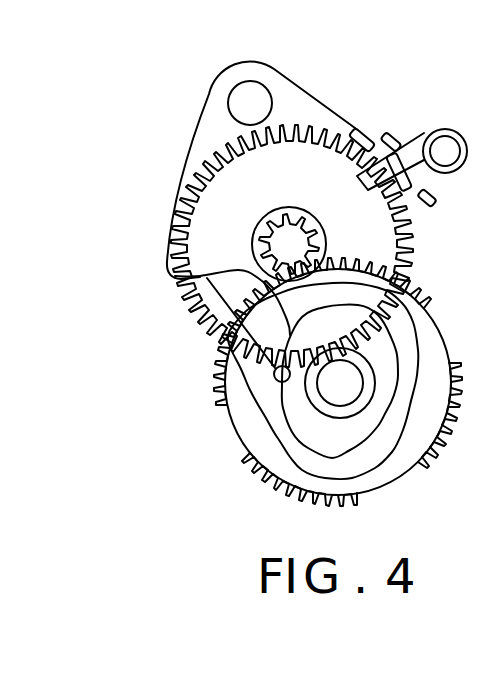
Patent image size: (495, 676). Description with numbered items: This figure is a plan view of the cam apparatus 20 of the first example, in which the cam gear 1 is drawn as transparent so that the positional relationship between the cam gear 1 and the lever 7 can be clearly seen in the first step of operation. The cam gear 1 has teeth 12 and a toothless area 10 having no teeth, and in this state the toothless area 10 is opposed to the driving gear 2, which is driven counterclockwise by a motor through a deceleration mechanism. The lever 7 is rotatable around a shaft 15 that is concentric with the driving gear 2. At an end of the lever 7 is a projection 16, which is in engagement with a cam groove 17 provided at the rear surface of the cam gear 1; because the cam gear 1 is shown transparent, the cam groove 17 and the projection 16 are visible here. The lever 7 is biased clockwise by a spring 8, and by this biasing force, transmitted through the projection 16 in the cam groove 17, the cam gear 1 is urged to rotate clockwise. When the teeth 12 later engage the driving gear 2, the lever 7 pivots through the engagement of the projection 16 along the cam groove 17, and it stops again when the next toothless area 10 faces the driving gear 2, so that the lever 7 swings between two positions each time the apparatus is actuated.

The cam gear 1 is at (422, 432).
The driving gear 2 is at (262, 222).
The lever 7 is at (293, 100).
The spring 8 is at (434, 173).
The toothless area 10 is at (197, 310).
The teeth 12 is at (222, 355).
The shaft 15 is at (302, 207).
The projection 16 is at (270, 388).
The cam groove 17 is at (276, 434).
The cam apparatus 20 is at (360, 74).